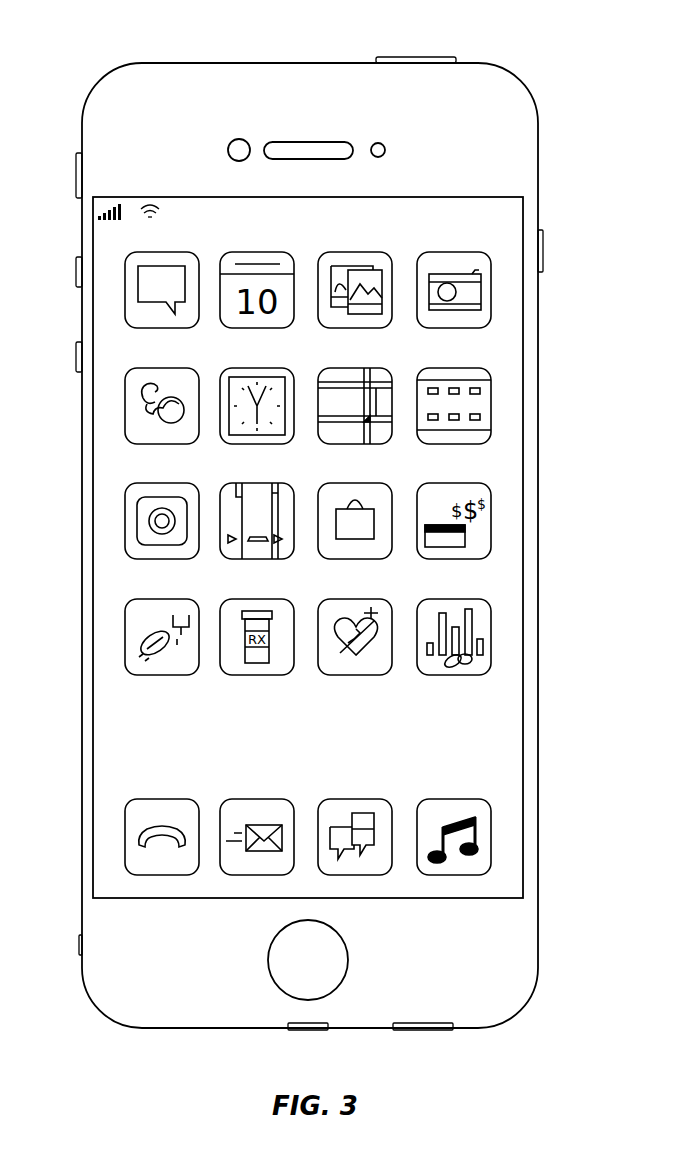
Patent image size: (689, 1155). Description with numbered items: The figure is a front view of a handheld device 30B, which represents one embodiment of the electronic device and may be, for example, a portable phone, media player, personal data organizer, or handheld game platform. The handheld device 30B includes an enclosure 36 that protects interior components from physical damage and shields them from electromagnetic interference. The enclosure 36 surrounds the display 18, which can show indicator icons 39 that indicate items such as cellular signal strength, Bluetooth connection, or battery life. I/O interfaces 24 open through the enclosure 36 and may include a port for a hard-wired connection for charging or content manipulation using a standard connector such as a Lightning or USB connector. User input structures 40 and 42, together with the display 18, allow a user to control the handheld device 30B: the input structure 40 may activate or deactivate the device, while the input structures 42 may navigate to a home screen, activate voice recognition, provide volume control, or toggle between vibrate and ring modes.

The handheld device 30B is at (90, 62).
The enclosure 36 is at (540, 150).
The input structure 40 is at (415, 56).
The display 18 is at (523, 593).
The indicator icons 39 is at (150, 201).
The input structures 42 is at (74, 176).
The I/O interfaces 24 is at (310, 1031).